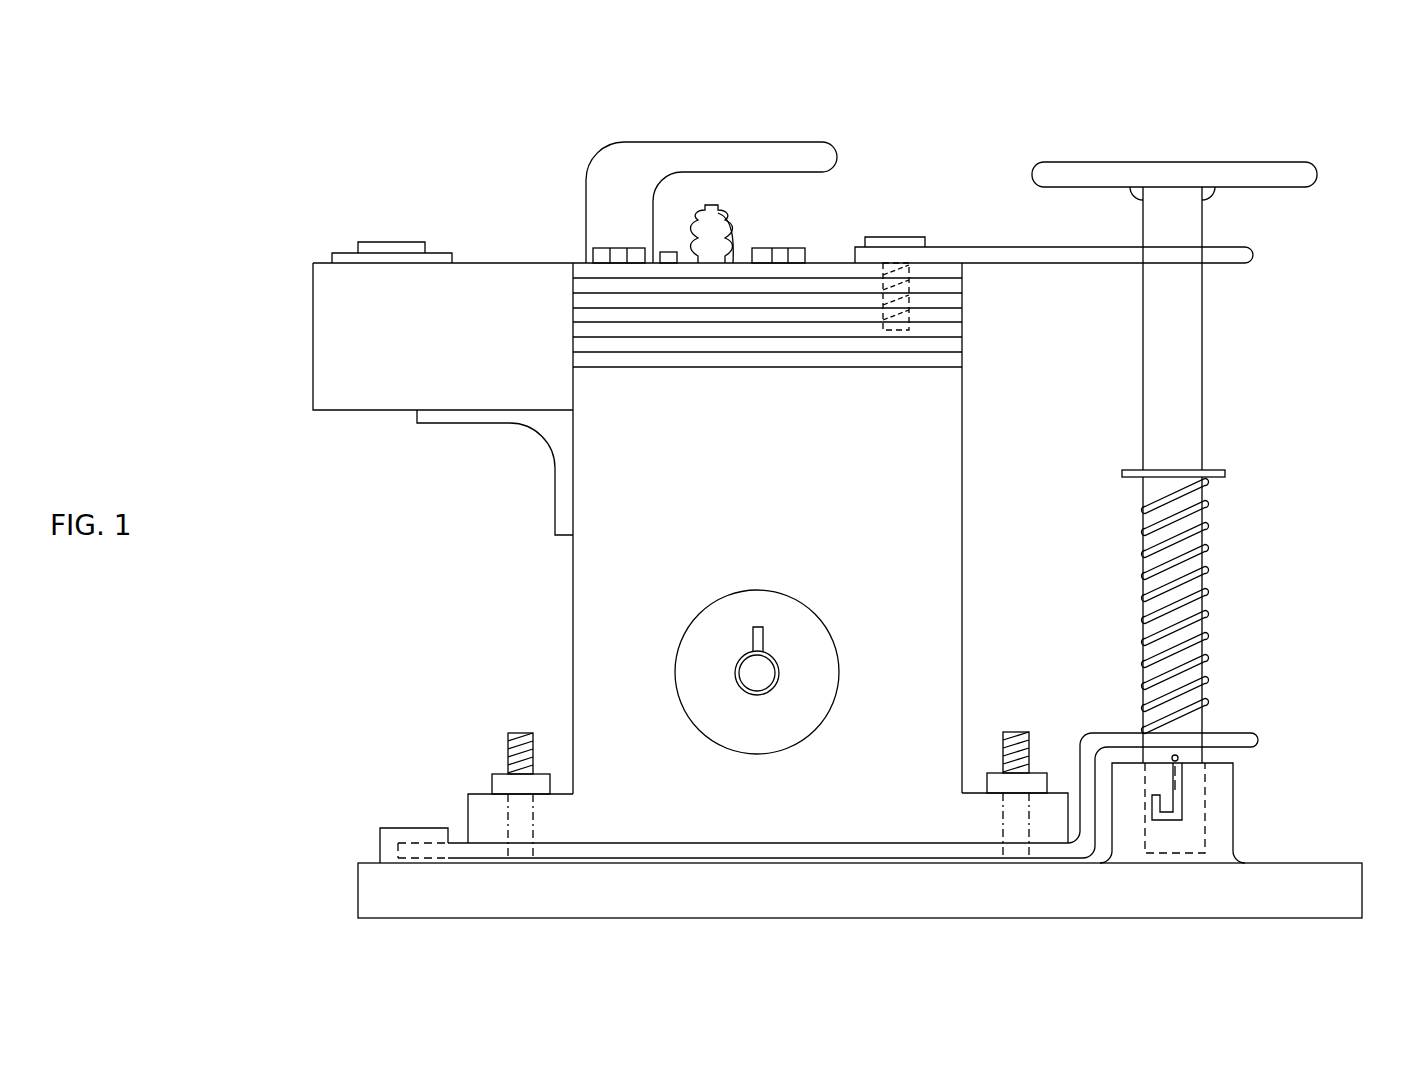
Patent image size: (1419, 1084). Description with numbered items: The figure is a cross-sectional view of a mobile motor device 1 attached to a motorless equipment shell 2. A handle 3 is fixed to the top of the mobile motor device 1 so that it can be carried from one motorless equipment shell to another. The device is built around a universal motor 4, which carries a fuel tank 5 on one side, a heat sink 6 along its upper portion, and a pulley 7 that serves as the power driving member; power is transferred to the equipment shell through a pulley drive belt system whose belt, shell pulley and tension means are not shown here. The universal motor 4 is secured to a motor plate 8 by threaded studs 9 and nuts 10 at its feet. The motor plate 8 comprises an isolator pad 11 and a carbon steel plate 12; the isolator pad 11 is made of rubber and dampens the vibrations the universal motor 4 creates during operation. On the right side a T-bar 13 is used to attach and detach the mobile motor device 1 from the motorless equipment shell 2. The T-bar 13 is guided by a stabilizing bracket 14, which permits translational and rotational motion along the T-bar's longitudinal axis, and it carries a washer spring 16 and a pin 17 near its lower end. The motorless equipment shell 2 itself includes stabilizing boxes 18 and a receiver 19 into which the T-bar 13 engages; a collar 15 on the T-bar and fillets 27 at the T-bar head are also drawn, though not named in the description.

The mobile motor device 1 is at (557, 255).
The motorless equipment shell 2 is at (356, 878).
The handle 3 is at (810, 163).
The universal motor 4 is at (628, 650).
The fuel tank 5 is at (416, 365).
The heat sink 6 is at (765, 296).
The pulley 7 is at (743, 630).
The motor plate 8 is at (460, 836).
The threaded studs 9 is at (1020, 733).
The nuts 10 is at (1038, 772).
The isolator pad 11 is at (595, 862).
The carbon steel plate 12 is at (862, 848).
The T-bar 13 is at (1215, 162).
The stabilizing bracket 14 is at (1005, 247).
The collar 15 is at (1125, 479).
The washer spring 16 is at (1212, 570).
The pin 17 is at (1178, 755).
The stabilizing boxes 18 is at (430, 833).
The receiver 19 is at (1218, 840).
The fillets 27 is at (1130, 195).